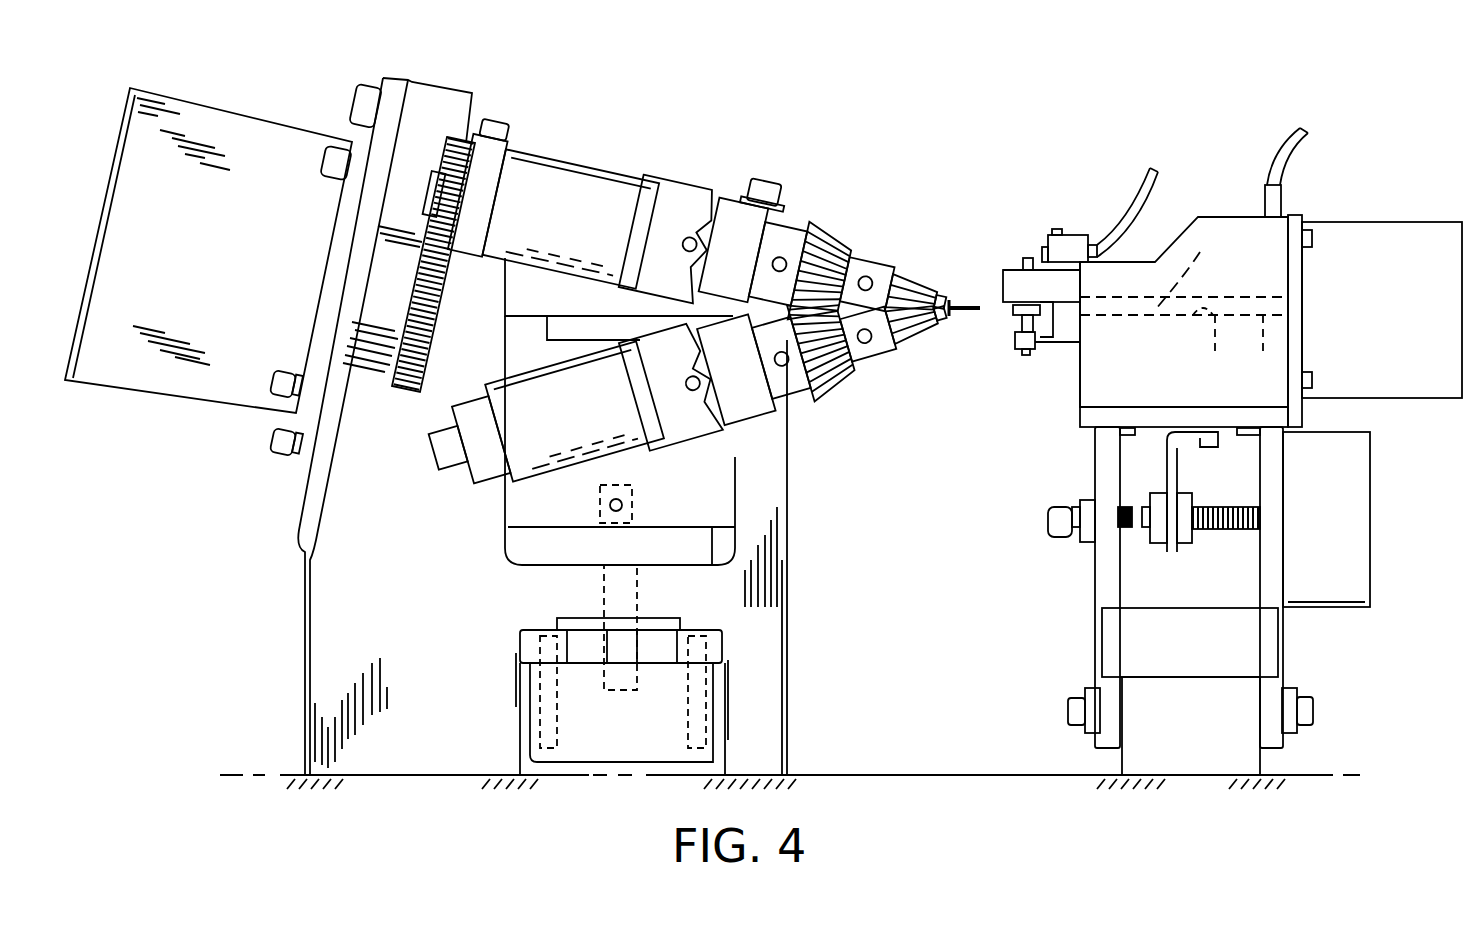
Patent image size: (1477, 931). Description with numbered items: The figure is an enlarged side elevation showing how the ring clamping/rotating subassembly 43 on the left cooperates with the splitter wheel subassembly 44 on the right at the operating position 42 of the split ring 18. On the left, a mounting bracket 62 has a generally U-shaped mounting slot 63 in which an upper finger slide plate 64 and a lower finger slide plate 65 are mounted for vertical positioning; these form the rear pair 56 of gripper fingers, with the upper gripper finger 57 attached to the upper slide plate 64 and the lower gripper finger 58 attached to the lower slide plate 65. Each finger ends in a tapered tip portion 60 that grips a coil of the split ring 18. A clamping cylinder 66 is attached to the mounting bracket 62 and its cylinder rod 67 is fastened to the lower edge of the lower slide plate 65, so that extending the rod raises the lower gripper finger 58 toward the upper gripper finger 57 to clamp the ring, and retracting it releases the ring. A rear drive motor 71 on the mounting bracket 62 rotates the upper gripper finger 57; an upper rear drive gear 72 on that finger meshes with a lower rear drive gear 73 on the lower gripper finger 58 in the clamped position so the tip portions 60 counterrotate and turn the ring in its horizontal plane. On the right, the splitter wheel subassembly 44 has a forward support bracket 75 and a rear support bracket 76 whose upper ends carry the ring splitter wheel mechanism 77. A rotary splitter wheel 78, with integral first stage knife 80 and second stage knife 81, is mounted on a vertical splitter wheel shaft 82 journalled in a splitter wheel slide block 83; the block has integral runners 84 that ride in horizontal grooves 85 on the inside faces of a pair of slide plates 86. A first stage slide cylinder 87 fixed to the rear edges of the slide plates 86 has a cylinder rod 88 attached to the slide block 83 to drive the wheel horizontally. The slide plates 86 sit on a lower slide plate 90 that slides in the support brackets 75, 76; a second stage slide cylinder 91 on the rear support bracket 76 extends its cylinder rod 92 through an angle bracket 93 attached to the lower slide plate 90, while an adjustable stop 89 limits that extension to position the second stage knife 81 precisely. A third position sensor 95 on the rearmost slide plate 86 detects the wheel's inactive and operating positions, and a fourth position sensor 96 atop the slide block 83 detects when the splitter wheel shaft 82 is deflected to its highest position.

The rear drive motor 71 is at (243, 133).
The mounting bracket 62 is at (313, 598).
The upper finger slide plate 64 is at (514, 283).
The lower finger slide plate 65 is at (513, 503).
The mounting slot 63 is at (524, 557).
The clamping cylinder 66 is at (623, 742).
The cylinder rod 67 is at (630, 650).
The ring clamping/rotating subassembly 43 is at (814, 212).
The upper rear drive gear 72 is at (820, 237).
The upper gripper finger 57 is at (893, 275).
The rear pair of gripper fingers 56 is at (918, 276).
The tapered tip portion 60 is at (937, 300).
The lower rear drive gear 73 is at (827, 378).
The lower gripper finger 58 is at (903, 343).
The split ring 18 is at (977, 319).
The operating position 42 is at (969, 314).
The ring splitter wheel mechanism 77 is at (1005, 262).
The first stage knife 80 is at (1015, 305).
The rotary splitter wheel 78 is at (1006, 318).
The second stage knife 81 is at (1028, 347).
The splitter wheel shaft 82 is at (1028, 258).
The fourth position sensor 96 is at (1070, 252).
The slide plates 86 is at (1170, 250).
The splitter wheel slide block 83 is at (1068, 292).
The runners 84 is at (1194, 277).
The horizontal grooves 85 is at (1226, 350).
The cylinder rod 88 is at (1269, 349).
The first stage slide cylinder 87 is at (1425, 380).
The third position sensor 95 is at (1273, 203).
The splitter wheel subassembly 44 is at (1198, 198).
The lower slide plate 90 is at (1170, 410).
The forward support bracket 75 is at (1102, 600).
The rear support bracket 76 is at (1273, 573).
The second stage slide cylinder 91 is at (1357, 487).
The angle bracket 93 is at (1175, 473).
The cylinder rod 92 is at (1238, 537).
The adjustable stop 89 is at (1075, 542).